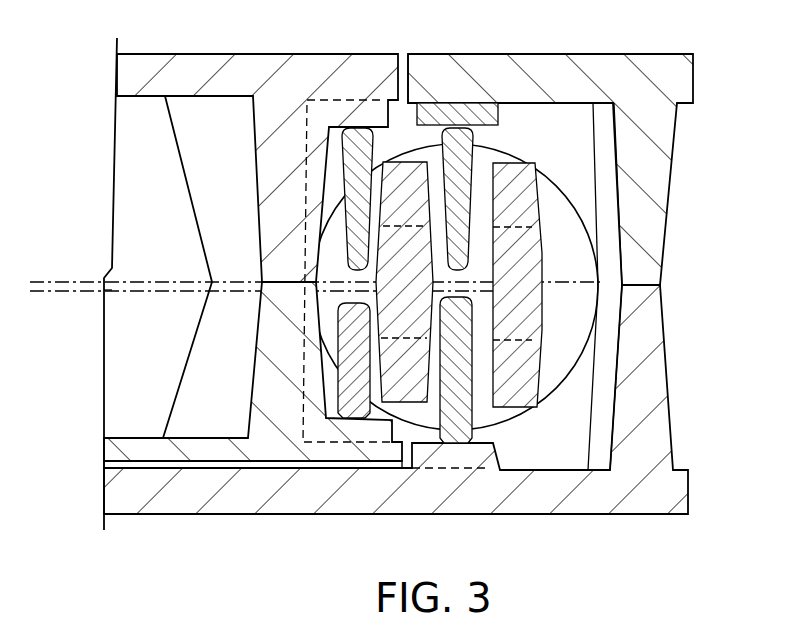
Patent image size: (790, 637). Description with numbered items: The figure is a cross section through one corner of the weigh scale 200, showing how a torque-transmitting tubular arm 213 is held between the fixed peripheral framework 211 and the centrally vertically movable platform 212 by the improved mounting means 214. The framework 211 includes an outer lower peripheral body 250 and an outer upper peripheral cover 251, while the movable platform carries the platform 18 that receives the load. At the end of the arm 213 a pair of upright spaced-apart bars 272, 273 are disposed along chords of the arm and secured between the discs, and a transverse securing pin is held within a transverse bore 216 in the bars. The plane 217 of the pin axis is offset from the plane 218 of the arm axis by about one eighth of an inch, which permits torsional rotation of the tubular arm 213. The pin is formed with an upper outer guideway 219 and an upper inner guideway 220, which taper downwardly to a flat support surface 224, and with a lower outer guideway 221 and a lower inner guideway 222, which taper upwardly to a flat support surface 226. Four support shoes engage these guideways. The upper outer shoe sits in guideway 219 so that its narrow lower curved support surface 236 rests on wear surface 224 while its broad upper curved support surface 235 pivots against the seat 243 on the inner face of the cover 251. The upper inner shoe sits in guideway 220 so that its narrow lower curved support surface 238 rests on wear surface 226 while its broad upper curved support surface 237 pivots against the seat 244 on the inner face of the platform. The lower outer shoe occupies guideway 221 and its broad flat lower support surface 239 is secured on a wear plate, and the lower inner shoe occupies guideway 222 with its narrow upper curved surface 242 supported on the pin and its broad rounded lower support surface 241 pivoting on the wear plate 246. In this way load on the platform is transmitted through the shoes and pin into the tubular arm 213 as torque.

The platform 18 is at (188, 68).
The weigh scale 200 is at (280, 46).
The broad upper curved support surface 235 is at (341, 122).
The seat 244 is at (343, 125).
The seat 243 is at (452, 110).
The outer upper peripheral cover 251 is at (518, 80).
The broad upper curved support surface 237 is at (500, 140).
The centrally vertically movable platform 212 is at (117, 128).
The upper inner guideway 220 is at (380, 168).
The narrow lower curved support surface 236 is at (360, 262).
The flat support surface 224 is at (355, 280).
The plane of the central longitudinal axis of the securing pin 217 is at (95, 277).
The plane of the central longitudinal axis of the torque-transmitting tubular arm 218 is at (97, 290).
The flat support surface 226 is at (350, 282).
The narrow upper curved surface 242 is at (345, 318).
The upright bar 273 is at (395, 353).
The lower inner guideway 222 is at (335, 390).
The upper outer guideway 219 is at (547, 170).
The fixed peripheral framework 211 is at (670, 192).
The outer lower peripheral body 250 is at (640, 217).
The mounting means 214 is at (548, 243).
The narrow lower curved support surface 238 is at (473, 257).
The torque-transmitting tubular arm 213 is at (558, 348).
The transverse bore 216 is at (473, 378).
The upright bar 272 is at (473, 398).
The lower outer guideway 221 is at (547, 418).
The broad flat lower support surface 239 is at (352, 420).
The wear plate 246 is at (363, 433).
The broad rounded lower support surface 241 is at (477, 443).